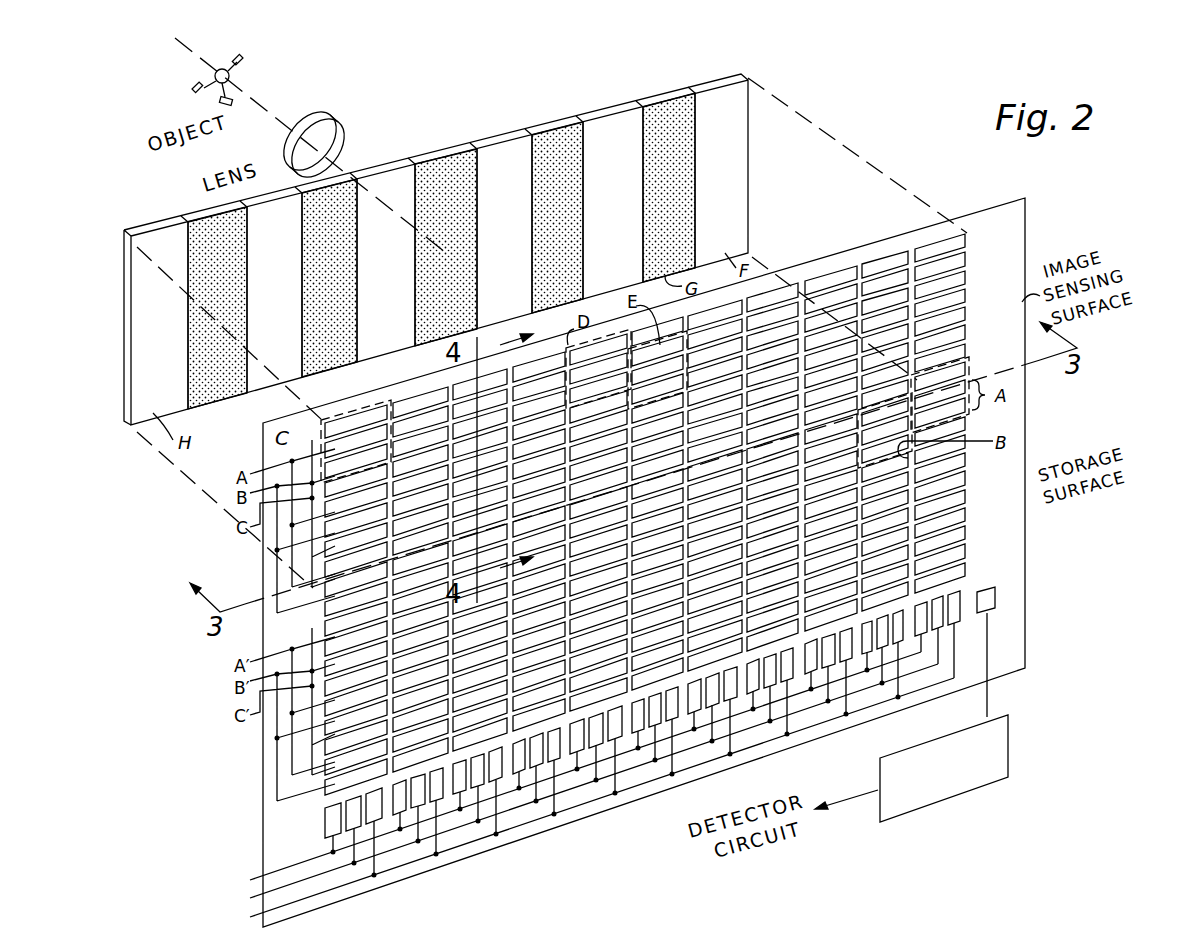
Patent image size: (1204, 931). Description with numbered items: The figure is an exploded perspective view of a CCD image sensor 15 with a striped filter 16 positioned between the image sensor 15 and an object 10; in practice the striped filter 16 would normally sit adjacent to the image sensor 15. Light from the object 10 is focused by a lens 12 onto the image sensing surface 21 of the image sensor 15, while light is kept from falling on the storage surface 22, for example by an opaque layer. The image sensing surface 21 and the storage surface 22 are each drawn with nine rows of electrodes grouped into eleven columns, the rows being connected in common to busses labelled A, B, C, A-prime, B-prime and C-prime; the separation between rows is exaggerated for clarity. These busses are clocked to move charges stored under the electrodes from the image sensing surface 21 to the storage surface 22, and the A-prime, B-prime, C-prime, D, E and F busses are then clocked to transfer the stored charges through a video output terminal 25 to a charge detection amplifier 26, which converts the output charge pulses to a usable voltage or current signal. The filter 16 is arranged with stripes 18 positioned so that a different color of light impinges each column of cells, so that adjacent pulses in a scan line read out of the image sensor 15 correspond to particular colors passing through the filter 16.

The object 10 is at (196, 90).
The lens 12 is at (347, 137).
The CCD image sensor 15 is at (245, 749).
The striped filter 16 is at (758, 148).
The stripes 18 is at (338, 392).
The image sensing surface 21 is at (978, 225).
The storage surface 22 is at (978, 417).
The video output terminal 25 is at (993, 604).
The charge detection amplifier 26 is at (935, 800).